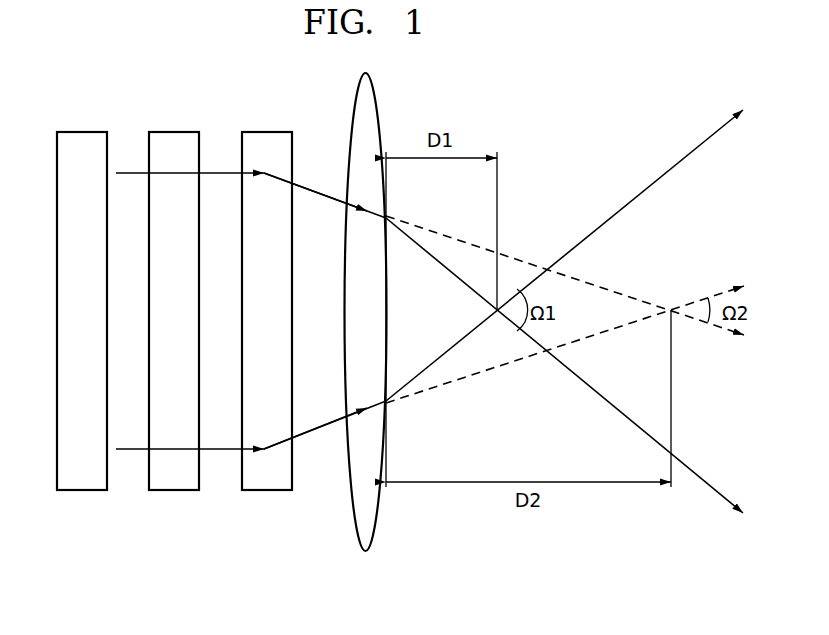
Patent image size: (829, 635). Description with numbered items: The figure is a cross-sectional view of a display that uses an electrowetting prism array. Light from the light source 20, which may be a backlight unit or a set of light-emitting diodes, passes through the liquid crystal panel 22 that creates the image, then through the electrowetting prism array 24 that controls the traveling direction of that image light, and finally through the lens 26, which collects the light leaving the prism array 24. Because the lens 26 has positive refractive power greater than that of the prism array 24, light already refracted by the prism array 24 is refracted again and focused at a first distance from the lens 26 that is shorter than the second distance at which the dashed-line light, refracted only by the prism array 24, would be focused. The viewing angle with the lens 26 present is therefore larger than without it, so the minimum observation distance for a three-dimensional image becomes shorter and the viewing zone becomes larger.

The light source 20 is at (79, 486).
The liquid crystal panel 22 is at (173, 486).
The electrowetting prism array 24 is at (273, 486).
The lens 26 is at (363, 540).